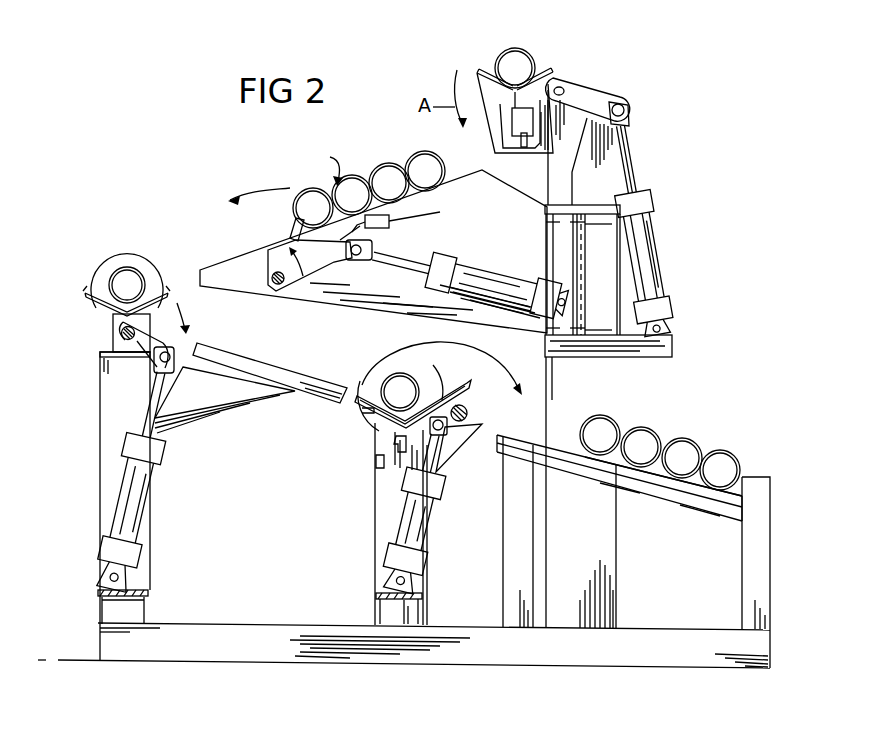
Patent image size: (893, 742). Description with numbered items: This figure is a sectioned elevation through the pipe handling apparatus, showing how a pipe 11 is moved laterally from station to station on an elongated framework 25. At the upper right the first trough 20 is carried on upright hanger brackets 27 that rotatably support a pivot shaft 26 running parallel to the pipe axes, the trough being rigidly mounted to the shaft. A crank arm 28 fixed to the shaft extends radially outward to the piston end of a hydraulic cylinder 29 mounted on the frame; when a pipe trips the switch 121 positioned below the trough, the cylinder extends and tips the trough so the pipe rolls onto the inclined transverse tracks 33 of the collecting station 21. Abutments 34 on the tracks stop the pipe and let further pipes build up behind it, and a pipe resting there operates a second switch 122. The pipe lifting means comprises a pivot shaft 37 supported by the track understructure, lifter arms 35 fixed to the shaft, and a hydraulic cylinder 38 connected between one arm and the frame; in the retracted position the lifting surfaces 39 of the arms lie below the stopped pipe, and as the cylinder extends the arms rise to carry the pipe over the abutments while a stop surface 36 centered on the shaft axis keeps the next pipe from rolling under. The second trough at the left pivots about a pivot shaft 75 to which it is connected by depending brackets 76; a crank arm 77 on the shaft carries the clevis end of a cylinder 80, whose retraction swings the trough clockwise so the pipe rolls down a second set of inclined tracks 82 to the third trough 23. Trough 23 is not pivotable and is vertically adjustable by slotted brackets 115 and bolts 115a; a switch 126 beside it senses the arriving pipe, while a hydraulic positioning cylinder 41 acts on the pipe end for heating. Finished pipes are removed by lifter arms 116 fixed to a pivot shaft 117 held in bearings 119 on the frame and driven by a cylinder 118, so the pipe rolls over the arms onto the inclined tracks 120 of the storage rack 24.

The pipe 11 is at (531, 57).
The first trough 20 is at (560, 76).
The collecting station 21 is at (323, 165).
The third trough 23 is at (437, 379).
The storage rack 24 is at (712, 450).
The framework 25 is at (618, 547).
The pivot shaft 26 is at (578, 88).
The hanger brackets 27 is at (608, 269).
The crank arm 28 is at (626, 106).
The hydraulic cylinder 29 is at (660, 226).
The transverse tracks 33 is at (250, 262).
The abutments 34 is at (290, 230).
The lifter arms 35 is at (350, 262).
The stop surface 36 is at (396, 238).
The pivot shaft 37 is at (270, 281).
The hydraulic cylinder 38 is at (492, 272).
The lifting surfaces 39 is at (310, 262).
The hydraulic positioning cylinder 41 is at (131, 252).
The pivot shaft 75 is at (119, 335).
The depending brackets 76 is at (103, 350).
The crank arm 77 is at (154, 358).
The cylinder 80 is at (155, 490).
The inclined tracks 82 is at (250, 358).
The slotted brackets 115 is at (394, 446).
The bolts 115a is at (376, 462).
The lifter arms 116 is at (471, 389).
The pivot shaft 117 is at (480, 408).
The bearings 119 is at (483, 423).
The cylinder 118 is at (432, 530).
The inclined tracks 120 is at (530, 146).
The switch 121 is at (392, 221).
The second switch 122 is at (180, 304).
The switch 126 is at (370, 420).